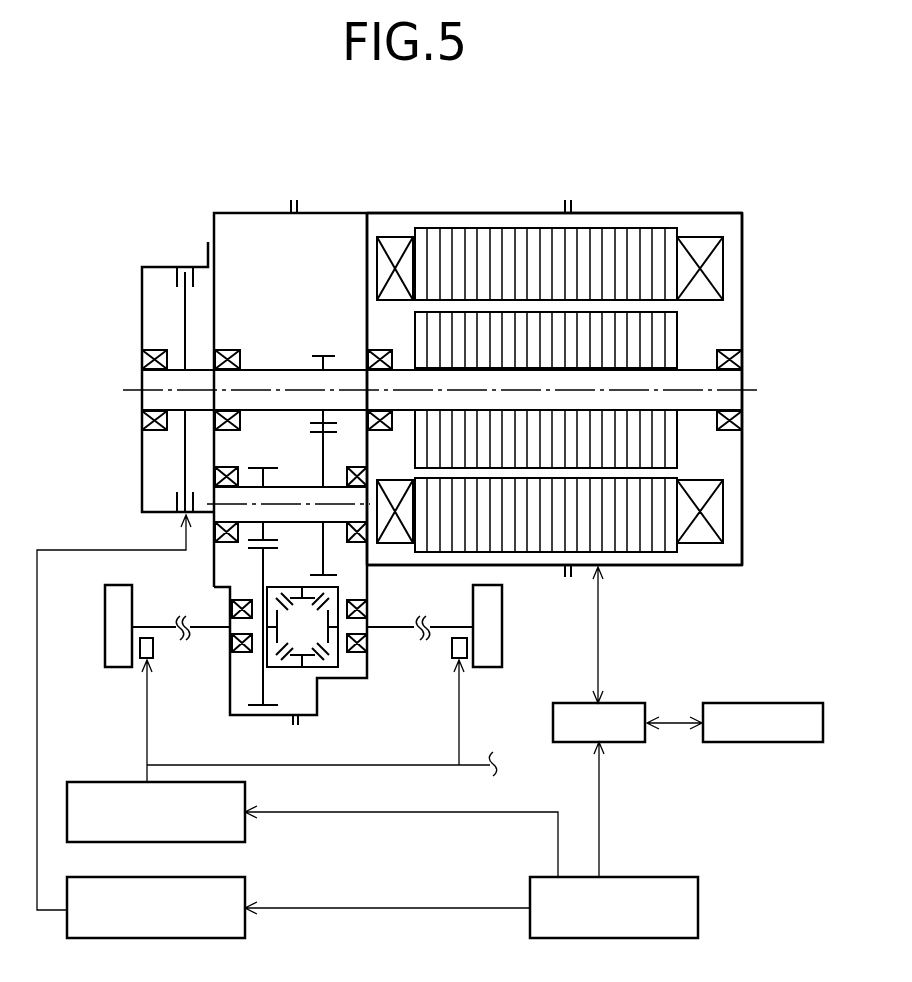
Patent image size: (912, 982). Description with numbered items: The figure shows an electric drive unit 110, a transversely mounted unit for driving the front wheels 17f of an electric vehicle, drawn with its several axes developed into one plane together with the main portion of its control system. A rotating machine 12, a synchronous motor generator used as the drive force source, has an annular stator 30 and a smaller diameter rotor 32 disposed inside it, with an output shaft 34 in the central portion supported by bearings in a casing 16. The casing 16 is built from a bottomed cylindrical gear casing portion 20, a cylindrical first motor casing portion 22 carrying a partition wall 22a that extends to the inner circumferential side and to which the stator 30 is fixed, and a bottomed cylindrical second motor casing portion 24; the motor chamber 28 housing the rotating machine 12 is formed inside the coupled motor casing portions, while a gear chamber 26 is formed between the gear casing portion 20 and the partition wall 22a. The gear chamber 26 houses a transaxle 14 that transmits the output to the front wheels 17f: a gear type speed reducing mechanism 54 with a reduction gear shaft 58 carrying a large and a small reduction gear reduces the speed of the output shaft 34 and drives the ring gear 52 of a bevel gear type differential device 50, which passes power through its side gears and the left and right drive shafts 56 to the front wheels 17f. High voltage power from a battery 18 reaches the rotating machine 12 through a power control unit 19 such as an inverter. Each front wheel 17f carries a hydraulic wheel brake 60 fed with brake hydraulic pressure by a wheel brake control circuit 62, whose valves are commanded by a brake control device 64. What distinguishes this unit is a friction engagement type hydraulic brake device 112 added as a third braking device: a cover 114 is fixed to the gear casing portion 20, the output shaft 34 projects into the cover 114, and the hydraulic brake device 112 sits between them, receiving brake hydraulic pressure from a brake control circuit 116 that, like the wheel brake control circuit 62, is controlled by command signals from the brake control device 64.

The electric drive unit 110 is at (598, 139).
The casing 16 is at (643, 188).
The rotating machine 12 is at (512, 220).
The stator 30 is at (584, 240).
The rotor 32 is at (550, 455).
The motor chamber 28 is at (717, 336).
The second motor casing portion 24 is at (678, 210).
The first motor casing portion 22 is at (403, 212).
The partition wall 22a is at (367, 280).
The gear casing portion 20 is at (258, 213).
The gear chamber 26 is at (262, 250).
The transaxle 14 is at (287, 343).
The output shaft 34 is at (350, 375).
The reduction gear shaft 58 is at (292, 493).
The gear type speed reducing mechanism 54 is at (239, 552).
The ring gear 52 is at (262, 710).
The differential device 50 is at (326, 677).
The drive shafts 56 is at (207, 628).
The front wheels 17f is at (115, 593).
The wheel brake 60 is at (153, 650).
The power control unit 19 is at (612, 707).
The battery 18 is at (770, 707).
The wheel brake control circuit 62 is at (120, 788).
The brake control circuit 116 is at (203, 887).
The brake control device 64 is at (613, 888).
The hydraulic brake device 112 is at (183, 260).
The cover 114 is at (140, 327).